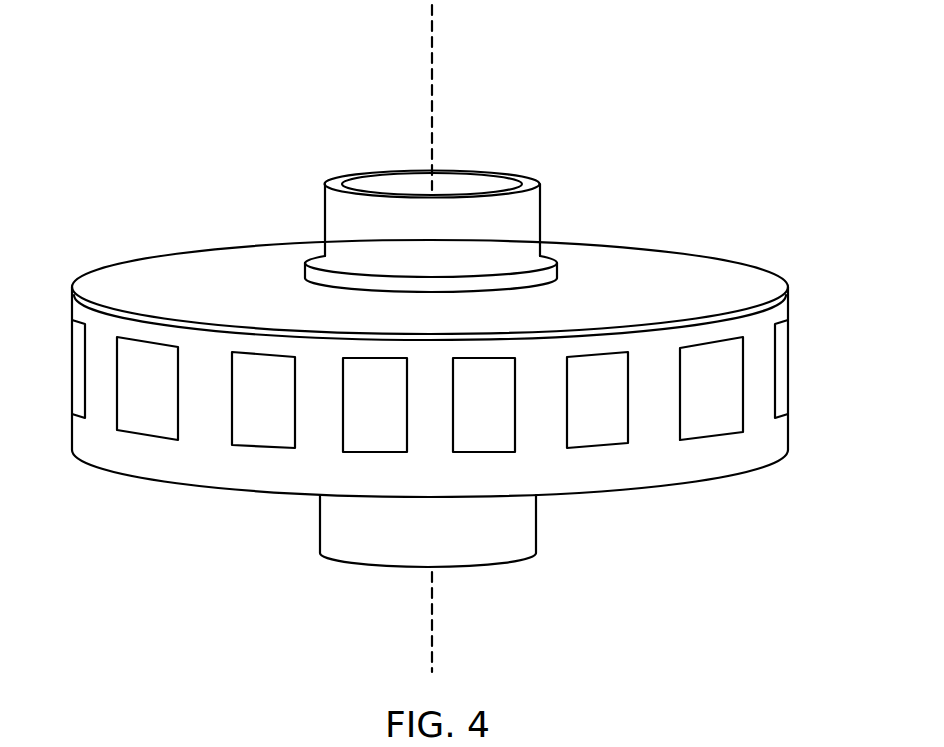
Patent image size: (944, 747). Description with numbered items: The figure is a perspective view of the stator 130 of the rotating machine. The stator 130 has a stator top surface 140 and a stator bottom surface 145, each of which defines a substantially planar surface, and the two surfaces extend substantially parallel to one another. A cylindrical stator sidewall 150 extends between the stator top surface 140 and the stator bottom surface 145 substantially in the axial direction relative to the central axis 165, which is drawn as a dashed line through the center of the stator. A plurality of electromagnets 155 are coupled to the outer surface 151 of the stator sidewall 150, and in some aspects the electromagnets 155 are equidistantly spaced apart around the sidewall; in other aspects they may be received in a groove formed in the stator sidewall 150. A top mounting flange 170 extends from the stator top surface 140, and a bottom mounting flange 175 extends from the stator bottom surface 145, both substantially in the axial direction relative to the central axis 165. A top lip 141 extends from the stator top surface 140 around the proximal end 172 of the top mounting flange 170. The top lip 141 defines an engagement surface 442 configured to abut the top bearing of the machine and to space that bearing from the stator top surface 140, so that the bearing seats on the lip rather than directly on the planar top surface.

The stator 130 is at (698, 148).
The stator top surface 140 is at (100, 255).
The top lip 141 is at (565, 272).
The stator bottom surface 145 is at (208, 494).
The cylindrical stator sidewall 150 is at (765, 317).
The outer surface 151 is at (187, 335).
The electromagnets 155 is at (80, 396).
The central axis 165 is at (434, 68).
The top mounting flange 170 is at (552, 220).
The proximal end 172 is at (487, 262).
The bottom mounting flange 175 is at (497, 582).
The engagement surface 442 is at (310, 262).